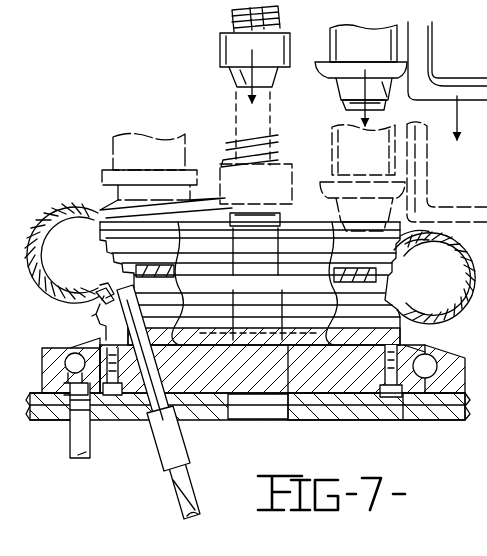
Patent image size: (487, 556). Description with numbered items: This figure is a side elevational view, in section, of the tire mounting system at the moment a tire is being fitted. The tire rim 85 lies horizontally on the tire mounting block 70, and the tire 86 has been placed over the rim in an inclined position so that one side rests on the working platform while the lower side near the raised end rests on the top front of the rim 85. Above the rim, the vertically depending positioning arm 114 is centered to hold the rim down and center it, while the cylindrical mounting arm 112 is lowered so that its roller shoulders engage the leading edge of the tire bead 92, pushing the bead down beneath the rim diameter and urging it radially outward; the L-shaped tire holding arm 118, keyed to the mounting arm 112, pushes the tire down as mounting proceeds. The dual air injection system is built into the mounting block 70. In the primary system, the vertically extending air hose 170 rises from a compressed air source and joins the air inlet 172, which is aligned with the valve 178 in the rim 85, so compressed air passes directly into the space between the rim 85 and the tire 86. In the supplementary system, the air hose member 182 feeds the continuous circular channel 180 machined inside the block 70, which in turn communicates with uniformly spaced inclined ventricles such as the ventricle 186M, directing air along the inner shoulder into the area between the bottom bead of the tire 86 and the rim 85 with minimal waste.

The positioning arm 114 is at (232, 21).
The mounting arm 112 is at (337, 39).
The tire holding arm 118 is at (430, 59).
The tire bead 92 is at (104, 192).
The tire 86 is at (63, 212).
The tire rim 85 is at (201, 227).
The valve 178 is at (112, 290).
The air inlet 172 is at (98, 337).
The circular channel 180 is at (68, 378).
The air hose member 182 is at (86, 452).
The air hose 170 is at (180, 456).
The ventricle (jet) 186M is at (418, 331).
The tire mounting block 70 is at (406, 404).